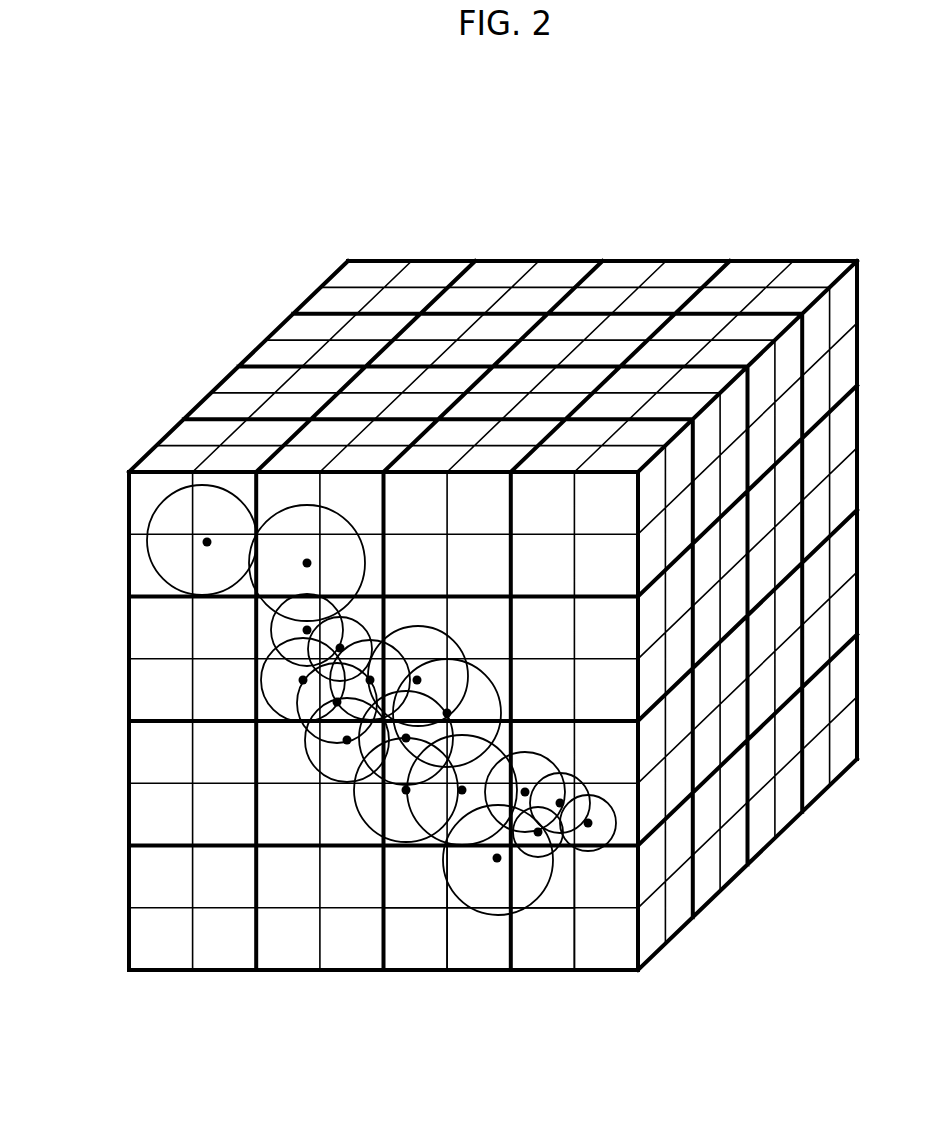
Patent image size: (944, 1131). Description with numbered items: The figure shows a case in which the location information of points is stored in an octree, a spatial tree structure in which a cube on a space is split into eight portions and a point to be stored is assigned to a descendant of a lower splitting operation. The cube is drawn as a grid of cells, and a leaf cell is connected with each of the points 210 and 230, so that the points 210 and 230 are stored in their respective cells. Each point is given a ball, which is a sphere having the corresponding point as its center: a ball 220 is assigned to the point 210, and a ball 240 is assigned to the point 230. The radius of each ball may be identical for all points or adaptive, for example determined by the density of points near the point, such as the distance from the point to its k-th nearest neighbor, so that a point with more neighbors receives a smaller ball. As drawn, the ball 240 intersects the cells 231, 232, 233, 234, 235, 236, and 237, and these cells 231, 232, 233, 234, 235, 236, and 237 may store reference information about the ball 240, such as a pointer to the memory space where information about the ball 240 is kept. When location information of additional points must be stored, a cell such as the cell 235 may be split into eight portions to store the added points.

The point 210 is at (207, 542).
The ball 220 is at (150, 497).
The point 230 is at (497, 860).
The cell 231 is at (408, 835).
The cell 232 is at (468, 832).
The cell 233 is at (617, 813).
The cell 234 is at (567, 885).
The cell 235 is at (545, 955).
The cell 236 is at (483, 948).
The cell 237 is at (425, 895).
The ball 240 is at (549, 884).